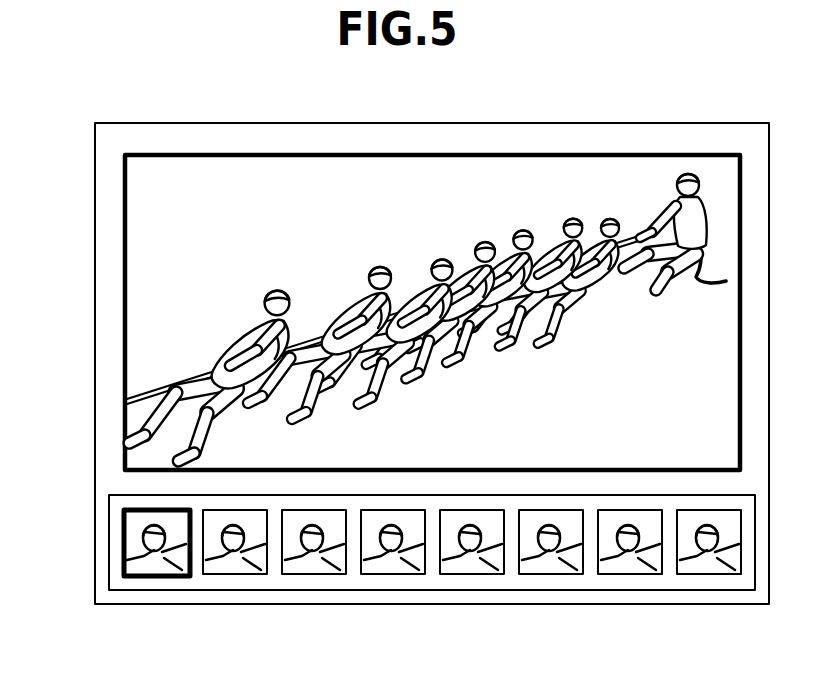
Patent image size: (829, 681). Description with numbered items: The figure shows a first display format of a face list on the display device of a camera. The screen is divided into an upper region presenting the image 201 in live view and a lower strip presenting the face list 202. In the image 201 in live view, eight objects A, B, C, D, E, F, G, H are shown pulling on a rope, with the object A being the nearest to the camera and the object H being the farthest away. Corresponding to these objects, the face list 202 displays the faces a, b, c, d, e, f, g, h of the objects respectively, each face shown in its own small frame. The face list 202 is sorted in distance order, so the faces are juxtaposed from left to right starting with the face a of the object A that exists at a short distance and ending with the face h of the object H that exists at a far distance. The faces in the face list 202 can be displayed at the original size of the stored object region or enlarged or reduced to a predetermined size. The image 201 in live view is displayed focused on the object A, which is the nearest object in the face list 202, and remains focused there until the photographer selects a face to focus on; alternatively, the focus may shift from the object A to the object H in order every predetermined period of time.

The image in live view 201 is at (126, 333).
The face list 202 is at (109, 548).
The object A is at (280, 290).
The object B is at (378, 267).
The object C is at (441, 258).
The object D is at (485, 240).
The object E is at (522, 228).
The object F is at (570, 217).
The object G is at (608, 216).
The object H is at (676, 184).
The face a is at (157, 578).
The face b is at (236, 576).
The face c is at (315, 576).
The face d is at (394, 576).
The face e is at (473, 576).
The face f is at (552, 576).
The face g is at (631, 576).
The face h is at (710, 576).